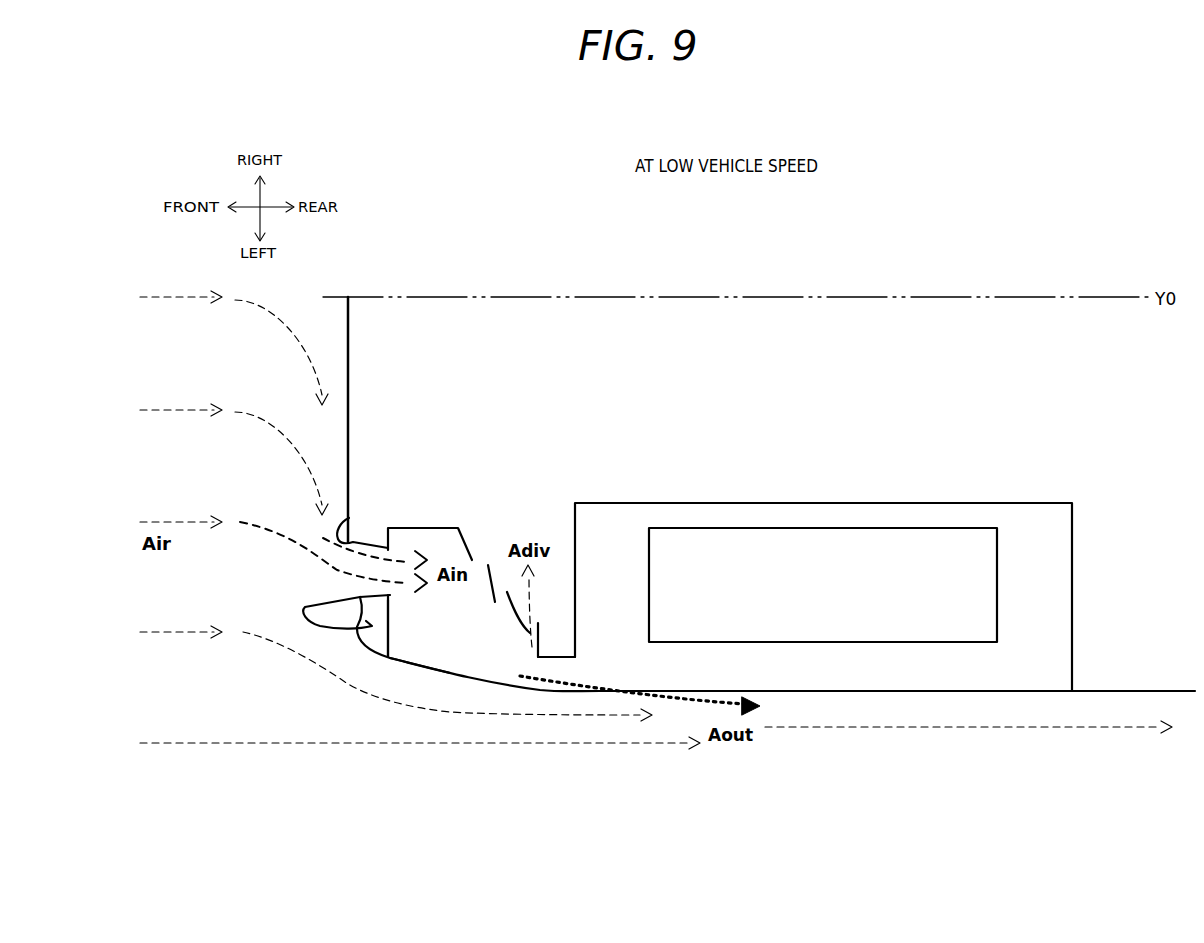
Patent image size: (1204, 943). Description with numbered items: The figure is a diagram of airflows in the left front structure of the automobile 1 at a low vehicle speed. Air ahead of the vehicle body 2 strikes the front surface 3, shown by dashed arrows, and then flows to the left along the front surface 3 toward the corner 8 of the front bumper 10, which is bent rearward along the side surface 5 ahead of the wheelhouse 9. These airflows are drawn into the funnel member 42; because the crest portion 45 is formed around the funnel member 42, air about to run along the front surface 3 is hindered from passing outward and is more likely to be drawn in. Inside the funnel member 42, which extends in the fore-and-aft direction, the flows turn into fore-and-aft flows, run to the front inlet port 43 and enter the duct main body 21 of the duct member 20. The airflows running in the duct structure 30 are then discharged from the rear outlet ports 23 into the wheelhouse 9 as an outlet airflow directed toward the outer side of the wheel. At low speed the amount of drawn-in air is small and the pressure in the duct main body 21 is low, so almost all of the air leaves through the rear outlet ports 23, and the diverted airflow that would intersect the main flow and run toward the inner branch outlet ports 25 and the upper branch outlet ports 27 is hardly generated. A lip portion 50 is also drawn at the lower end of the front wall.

The automobile 1 is at (803, 267).
The vehicle body 2 is at (630, 308).
The front surface 3 is at (348, 337).
The side surface 5 is at (1113, 688).
The corner 8 is at (390, 658).
The wheelhouse 9 is at (927, 680).
The front bumper 10 is at (442, 677).
The duct member 20 is at (448, 490).
The duct main body 21 is at (403, 527).
The rear outlet ports 23 is at (575, 672).
The inner branch outlet ports 25 is at (483, 560).
The upper branch outlet ports 27 is at (559, 539).
The duct structure 30 is at (422, 630).
The funnel member 42 is at (379, 474).
The front inlet port 43 is at (387, 571).
The crest portion 45 is at (312, 611).
The lip portion 50 is at (365, 540).